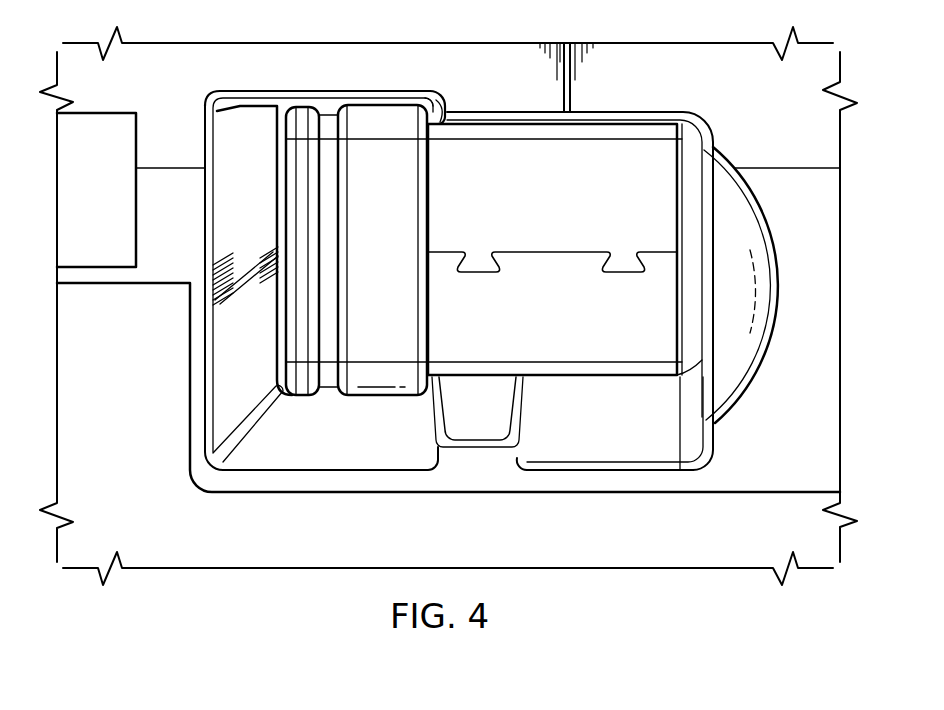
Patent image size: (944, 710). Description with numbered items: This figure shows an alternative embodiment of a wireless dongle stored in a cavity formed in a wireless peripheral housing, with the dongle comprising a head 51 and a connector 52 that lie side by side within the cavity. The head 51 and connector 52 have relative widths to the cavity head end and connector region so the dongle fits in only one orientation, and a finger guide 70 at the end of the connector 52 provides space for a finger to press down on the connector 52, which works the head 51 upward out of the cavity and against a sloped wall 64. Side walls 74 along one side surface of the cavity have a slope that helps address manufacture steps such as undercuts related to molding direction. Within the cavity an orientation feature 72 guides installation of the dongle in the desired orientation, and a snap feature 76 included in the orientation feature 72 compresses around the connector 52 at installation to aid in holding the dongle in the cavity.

The dongle head 51 is at (395, 205).
The connector 52 is at (562, 205).
The sloped wall 64 is at (236, 325).
The finger guide 70 is at (740, 230).
The orientation feature 72 is at (742, 349).
The side walls 74 is at (340, 445).
The snap feature 76 is at (440, 120).